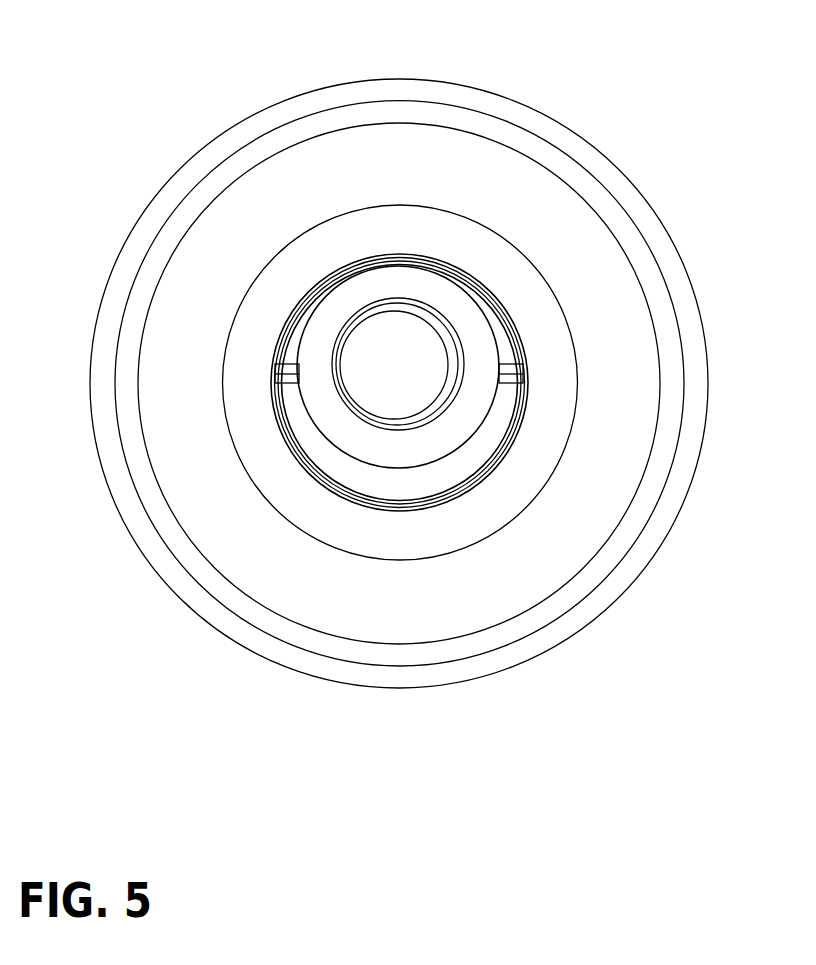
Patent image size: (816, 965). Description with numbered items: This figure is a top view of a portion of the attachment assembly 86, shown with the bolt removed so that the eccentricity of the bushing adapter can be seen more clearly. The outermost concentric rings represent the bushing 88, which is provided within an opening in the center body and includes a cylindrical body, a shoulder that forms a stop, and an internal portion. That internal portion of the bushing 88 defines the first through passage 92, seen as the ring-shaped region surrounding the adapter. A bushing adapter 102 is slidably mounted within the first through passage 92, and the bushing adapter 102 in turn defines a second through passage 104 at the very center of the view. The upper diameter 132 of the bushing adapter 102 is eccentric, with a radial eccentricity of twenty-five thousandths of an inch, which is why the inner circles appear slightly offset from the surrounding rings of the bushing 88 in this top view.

The attachment assembly 86 is at (220, 113).
The bushing 88 is at (543, 123).
The first through passage 92 is at (393, 510).
The bushing adapter 102 is at (367, 510).
The second through passage 104 is at (420, 376).
The upper diameter 132 is at (413, 510).